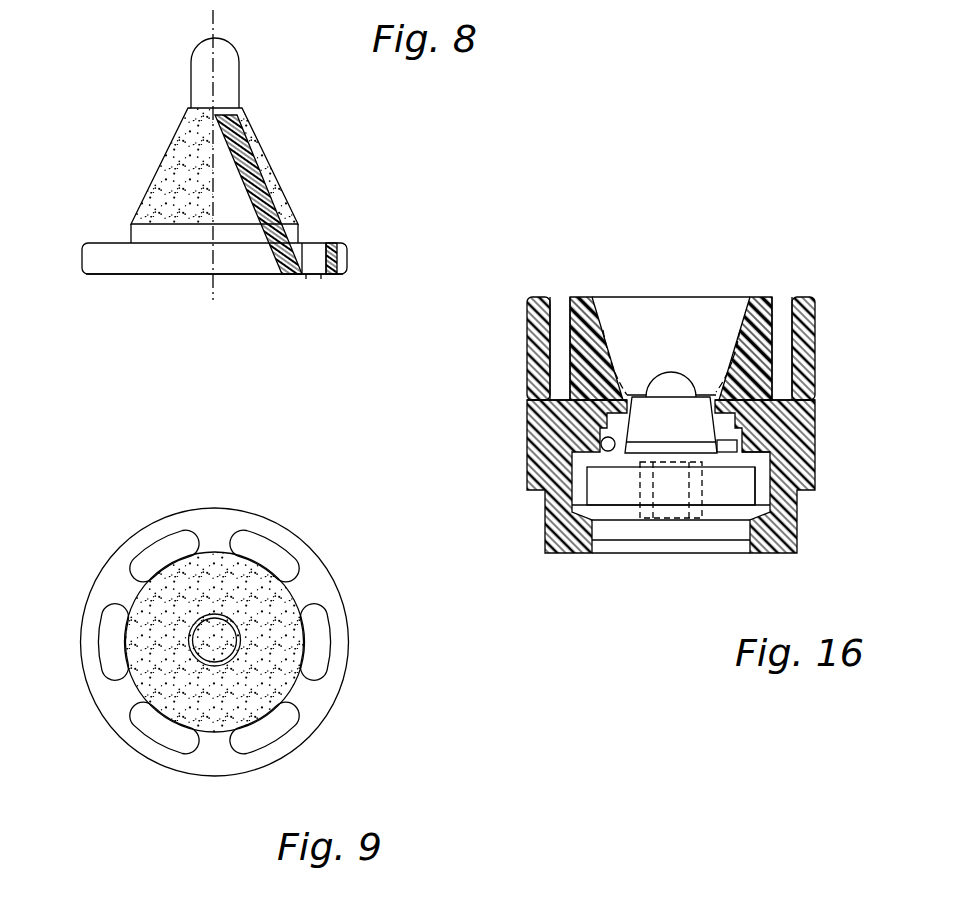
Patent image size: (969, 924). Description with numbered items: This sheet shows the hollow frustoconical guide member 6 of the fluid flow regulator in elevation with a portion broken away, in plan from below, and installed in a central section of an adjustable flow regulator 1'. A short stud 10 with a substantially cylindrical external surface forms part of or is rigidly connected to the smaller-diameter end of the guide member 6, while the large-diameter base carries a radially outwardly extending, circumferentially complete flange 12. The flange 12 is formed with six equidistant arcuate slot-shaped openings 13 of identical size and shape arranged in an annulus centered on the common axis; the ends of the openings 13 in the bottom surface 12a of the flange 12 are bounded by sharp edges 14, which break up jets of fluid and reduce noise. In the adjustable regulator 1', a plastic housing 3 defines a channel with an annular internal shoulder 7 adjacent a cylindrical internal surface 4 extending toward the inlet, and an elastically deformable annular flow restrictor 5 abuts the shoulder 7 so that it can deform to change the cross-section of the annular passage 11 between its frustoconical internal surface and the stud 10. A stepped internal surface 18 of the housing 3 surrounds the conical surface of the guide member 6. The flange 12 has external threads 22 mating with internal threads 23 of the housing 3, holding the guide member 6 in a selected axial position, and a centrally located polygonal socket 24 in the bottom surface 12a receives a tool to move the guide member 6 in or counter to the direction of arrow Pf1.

In FIG. 16, the flow regulator 1' is at (608, 268).
In FIG. 16, the housing 3 is at (806, 345).
In FIG. 16, the cylindrical internal surface 4 is at (788, 325).
In FIG. 16, the flow restrictor 5 is at (671, 326).
In FIG. 8, the guide member 6 is at (301, 158).
In FIG. 9, the guide member 6 is at (324, 540).
In FIG. 16, the guide member 6 is at (617, 485).
In FIG. 16, the annular internal shoulder 7 is at (798, 390).
In FIG. 8, the stud 10 is at (230, 66).
In FIG. 9, the stud 10 is at (222, 647).
In FIG. 16, the stud 10 is at (677, 386).
In FIG. 16, the annular passage 11 is at (629, 394).
In FIG. 8, the flange 12 is at (180, 266).
In FIG. 9, the flange 12 is at (222, 528).
In FIG. 16, the flange 12 is at (600, 485).
In FIG. 8, the bottom surface 12a is at (108, 277).
In FIG. 16, the bottom surface 12a is at (720, 521).
In FIG. 8, the arcuate slot-shaped openings 13 is at (318, 252).
In FIG. 9, the arcuate slot-shaped openings 13 is at (112, 618).
In FIG. 8, the sharp edges 14 is at (321, 279).
In FIG. 16, the stepped internal surface 18 is at (604, 447).
In FIG. 16, the external threads 22 is at (774, 464).
In FIG. 16, the internal threads 23 is at (757, 488).
In FIG. 16, the polygonal socket 24 is at (668, 484).
In FIG. 16, the arrow Pf1 is at (670, 322).